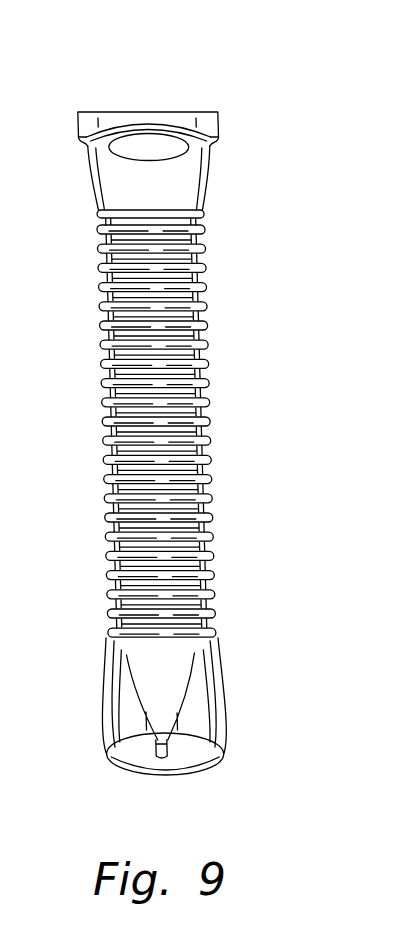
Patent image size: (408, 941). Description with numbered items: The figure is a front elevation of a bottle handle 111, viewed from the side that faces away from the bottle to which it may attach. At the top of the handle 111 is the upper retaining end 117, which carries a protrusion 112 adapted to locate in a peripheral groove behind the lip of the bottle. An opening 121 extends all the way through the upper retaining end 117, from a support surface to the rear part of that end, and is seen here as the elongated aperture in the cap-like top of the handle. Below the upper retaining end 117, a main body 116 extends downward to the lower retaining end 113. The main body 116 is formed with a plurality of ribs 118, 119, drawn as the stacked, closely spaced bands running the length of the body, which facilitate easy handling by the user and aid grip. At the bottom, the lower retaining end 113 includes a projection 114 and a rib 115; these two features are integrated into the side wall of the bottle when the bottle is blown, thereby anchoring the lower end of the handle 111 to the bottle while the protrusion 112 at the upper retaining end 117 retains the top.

The handle 111 is at (92, 438).
The protrusion 112 is at (141, 111).
The lower retaining end 113 is at (219, 764).
The projection 114 is at (140, 757).
The rib 115 is at (175, 747).
The main body 116 is at (202, 356).
The upper retaining end 117 is at (230, 124).
The rib 118 is at (207, 424).
The rib 119 is at (208, 456).
The opening 121 is at (153, 140).